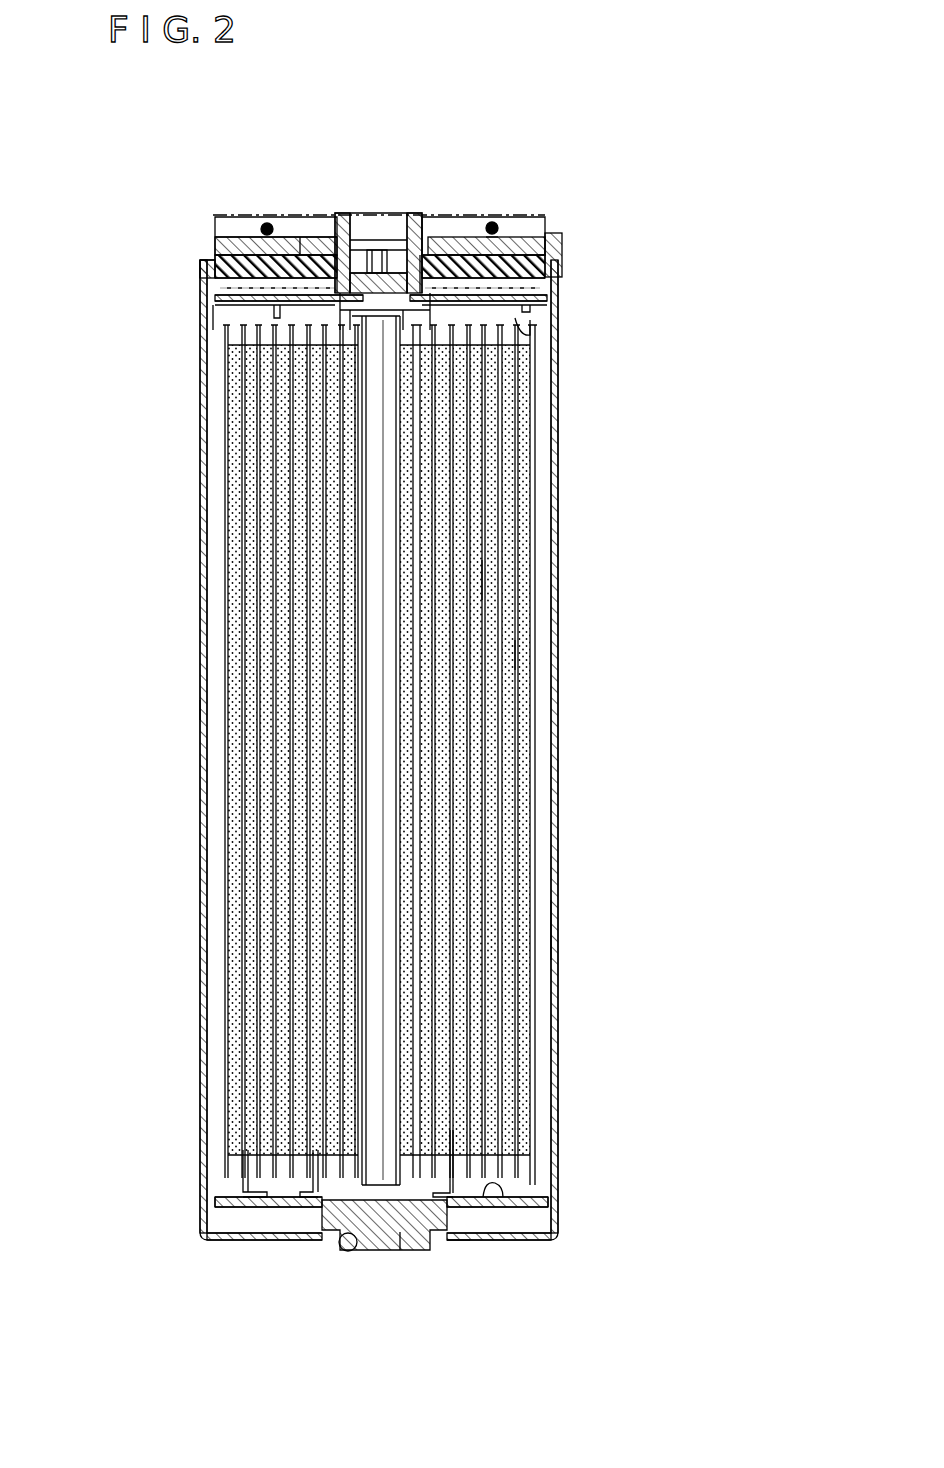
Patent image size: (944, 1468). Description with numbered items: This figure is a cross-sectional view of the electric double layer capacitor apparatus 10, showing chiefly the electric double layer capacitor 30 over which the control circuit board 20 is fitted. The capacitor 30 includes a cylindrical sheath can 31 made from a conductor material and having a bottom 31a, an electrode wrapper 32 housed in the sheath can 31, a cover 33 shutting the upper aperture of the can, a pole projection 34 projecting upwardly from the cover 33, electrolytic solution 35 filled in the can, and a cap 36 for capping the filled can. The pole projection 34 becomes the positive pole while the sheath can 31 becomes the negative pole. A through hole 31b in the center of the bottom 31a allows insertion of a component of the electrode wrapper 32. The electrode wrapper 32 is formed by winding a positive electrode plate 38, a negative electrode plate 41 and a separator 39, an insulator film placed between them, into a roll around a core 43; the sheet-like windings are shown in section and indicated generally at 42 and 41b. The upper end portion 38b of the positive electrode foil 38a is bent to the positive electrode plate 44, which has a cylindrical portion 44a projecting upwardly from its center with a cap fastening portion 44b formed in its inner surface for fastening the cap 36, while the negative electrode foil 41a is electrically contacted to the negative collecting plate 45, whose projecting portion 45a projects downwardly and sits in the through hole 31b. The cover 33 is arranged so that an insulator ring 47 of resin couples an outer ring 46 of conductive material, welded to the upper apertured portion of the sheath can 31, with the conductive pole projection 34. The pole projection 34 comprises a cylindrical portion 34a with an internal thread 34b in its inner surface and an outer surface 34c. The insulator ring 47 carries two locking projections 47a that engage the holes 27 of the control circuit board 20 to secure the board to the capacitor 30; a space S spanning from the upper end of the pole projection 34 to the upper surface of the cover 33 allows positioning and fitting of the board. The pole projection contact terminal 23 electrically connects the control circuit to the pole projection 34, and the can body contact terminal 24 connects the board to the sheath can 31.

The electric double layer capacitor apparatus 10 is at (760, 196).
The control circuit board 20 is at (548, 214).
The pole projection contact terminal 23 is at (456, 250).
The can body contact terminal 24 is at (560, 237).
The hole 27 is at (243, 255).
The electric double layer capacitor 30 is at (603, 720).
The sheath can 31 is at (572, 861).
The bottom 31a is at (505, 1243).
The through hole 31b is at (365, 1247).
The electrode wrapper 32 is at (557, 943).
The cover 33 is at (240, 258).
The pole projection 34 is at (443, 235).
The cylindrical portion 34a is at (492, 240).
The internal thread 34b is at (392, 235).
The outer surface 34c is at (322, 240).
The electrolytic solution 35 is at (210, 305).
The cap 36 is at (423, 211).
The positive electrode plate 38 is at (545, 1172).
The positive electrode foil 38a is at (490, 578).
The upper end portion 38b is at (530, 318).
The separator 39 is at (505, 398).
The negative electrode plate 41 is at (535, 332).
The negative electrode foil 41a is at (518, 650).
The lower collector plate 41b is at (530, 1213).
The separator 42 is at (537, 428).
The core 43 is at (380, 453).
The positive electrode plate 44 is at (285, 250).
The cylindrical portion 44a is at (315, 245).
The cap fastening portion 44b is at (354, 250).
The negative collecting plate 45 is at (251, 1221).
The projecting portion 45a is at (400, 1245).
The outer ring 46 is at (548, 272).
The insulator ring 47 is at (500, 232).
The locking projection 47a is at (262, 237).
The space S is at (215, 220).